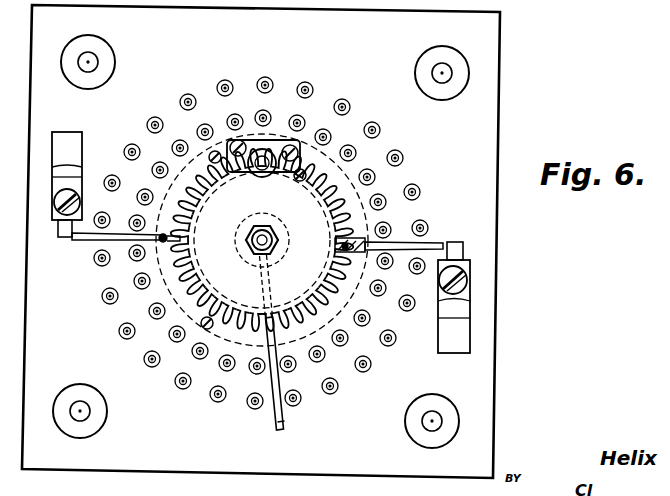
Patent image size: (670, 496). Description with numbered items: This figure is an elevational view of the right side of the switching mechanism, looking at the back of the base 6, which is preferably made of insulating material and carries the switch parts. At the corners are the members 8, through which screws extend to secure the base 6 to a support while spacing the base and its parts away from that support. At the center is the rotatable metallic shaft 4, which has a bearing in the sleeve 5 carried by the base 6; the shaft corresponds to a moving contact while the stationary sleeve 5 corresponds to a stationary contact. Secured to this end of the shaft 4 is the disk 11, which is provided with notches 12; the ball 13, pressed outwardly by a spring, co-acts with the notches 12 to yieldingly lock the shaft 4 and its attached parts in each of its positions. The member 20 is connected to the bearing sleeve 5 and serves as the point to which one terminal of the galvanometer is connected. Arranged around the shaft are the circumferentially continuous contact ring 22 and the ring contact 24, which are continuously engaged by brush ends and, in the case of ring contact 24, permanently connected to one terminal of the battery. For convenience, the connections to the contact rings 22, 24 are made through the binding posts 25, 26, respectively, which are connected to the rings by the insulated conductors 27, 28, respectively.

The central rotatable metallic shaft 4 is at (270, 248).
The sleeve 5 is at (284, 240).
The base 6 is at (487, 133).
The members 8 is at (110, 53).
The disk 11 is at (325, 192).
The notches 12 is at (340, 228).
The ball 13 is at (265, 160).
The member 20 is at (283, 428).
The contact ring 22 is at (205, 124).
The ring contact 24 is at (132, 144).
The binding post 25 is at (465, 298).
The binding post 26 is at (55, 190).
The insulated conductor 27 is at (430, 241).
The insulated conductor 28 is at (118, 232).